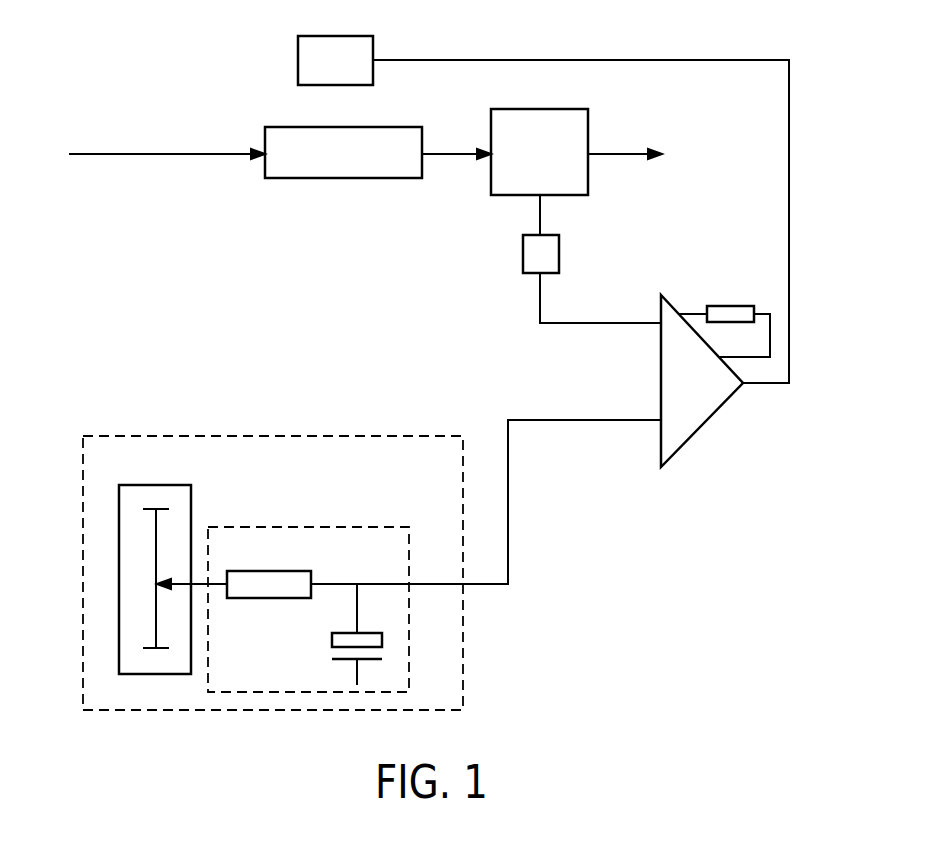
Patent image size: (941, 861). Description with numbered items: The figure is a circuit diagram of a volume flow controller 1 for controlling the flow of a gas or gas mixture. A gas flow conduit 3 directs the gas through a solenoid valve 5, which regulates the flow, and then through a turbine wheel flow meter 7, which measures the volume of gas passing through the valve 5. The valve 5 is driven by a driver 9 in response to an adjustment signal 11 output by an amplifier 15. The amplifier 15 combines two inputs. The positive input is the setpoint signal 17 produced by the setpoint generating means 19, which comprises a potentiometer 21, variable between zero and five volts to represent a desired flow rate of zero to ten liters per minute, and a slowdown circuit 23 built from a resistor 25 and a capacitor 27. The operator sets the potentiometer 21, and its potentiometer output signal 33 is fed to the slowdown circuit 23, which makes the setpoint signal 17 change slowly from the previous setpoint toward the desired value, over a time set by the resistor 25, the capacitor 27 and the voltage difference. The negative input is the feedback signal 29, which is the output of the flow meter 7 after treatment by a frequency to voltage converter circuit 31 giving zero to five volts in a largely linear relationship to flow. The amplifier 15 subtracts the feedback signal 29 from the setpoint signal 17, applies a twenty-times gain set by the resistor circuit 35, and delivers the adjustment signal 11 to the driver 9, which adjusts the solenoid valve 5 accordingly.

The volume flow controller 1 is at (838, 18).
The gas flow conduit 3 is at (140, 154).
The solenoid valve 5 is at (312, 165).
The turbine wheel flow meter 7 is at (507, 197).
The driver 9 is at (318, 63).
The adjustment signal 11 is at (789, 224).
The amplifier 15 is at (700, 398).
The setpoint signal 17 is at (572, 420).
The setpoint generating means 19 is at (442, 436).
The potentiometer 21 is at (138, 497).
The slowdown circuit 23 is at (352, 527).
The resistor 25 is at (262, 580).
The capacitor 27 is at (368, 642).
The feedback signal 29 is at (593, 323).
The frequency to voltage converter circuit 31 is at (543, 252).
The potentiometer output signal 33 is at (202, 586).
The resistor circuit 35 is at (738, 316).